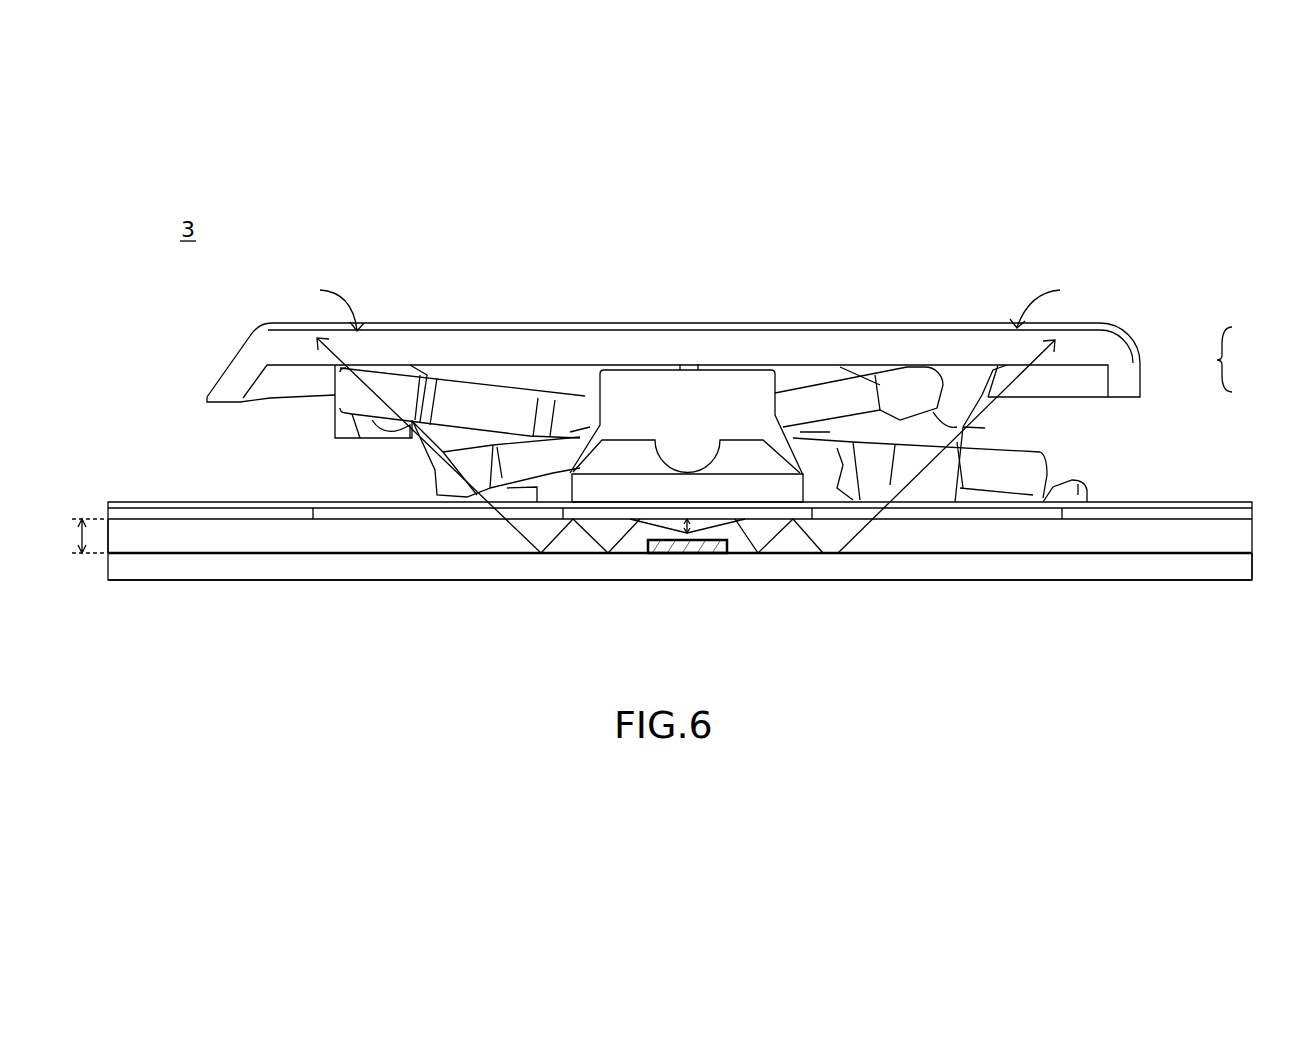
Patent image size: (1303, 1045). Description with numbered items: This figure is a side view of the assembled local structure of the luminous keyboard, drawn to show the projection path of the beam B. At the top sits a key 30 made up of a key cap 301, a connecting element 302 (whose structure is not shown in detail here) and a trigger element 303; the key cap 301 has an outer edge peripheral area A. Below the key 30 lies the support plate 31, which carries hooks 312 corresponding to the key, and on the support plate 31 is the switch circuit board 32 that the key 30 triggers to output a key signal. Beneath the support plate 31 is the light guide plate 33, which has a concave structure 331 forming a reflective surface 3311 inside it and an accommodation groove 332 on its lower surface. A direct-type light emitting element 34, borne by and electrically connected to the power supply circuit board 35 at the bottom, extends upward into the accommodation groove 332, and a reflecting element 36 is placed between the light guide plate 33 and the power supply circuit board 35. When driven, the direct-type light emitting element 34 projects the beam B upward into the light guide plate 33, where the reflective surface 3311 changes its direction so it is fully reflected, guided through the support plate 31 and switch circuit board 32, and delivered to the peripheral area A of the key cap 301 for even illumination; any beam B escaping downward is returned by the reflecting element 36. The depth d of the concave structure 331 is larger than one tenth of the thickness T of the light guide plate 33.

The key 30 is at (1235, 360).
The key cap 301 is at (1083, 338).
The connecting element 302 is at (1013, 465).
The trigger element 303 is at (715, 392).
The support plate 31 is at (1223, 512).
The hook 312 is at (1078, 482).
The switch circuit board 32 is at (1165, 502).
The light guide plate 33 is at (1087, 537).
The concave structure 331 is at (676, 516).
The reflective surface 3311 is at (630, 520).
The accommodation groove 332 is at (647, 545).
The direct-type light emitting element 34 is at (697, 545).
The power supply circuit board 35 is at (1037, 567).
The reflecting element 36 is at (1185, 555).
The peripheral area A is at (685, 304).
The beam B is at (686, 444).
The thickness of the light guide plate T is at (78, 536).
The depth of the concave structure d is at (692, 526).